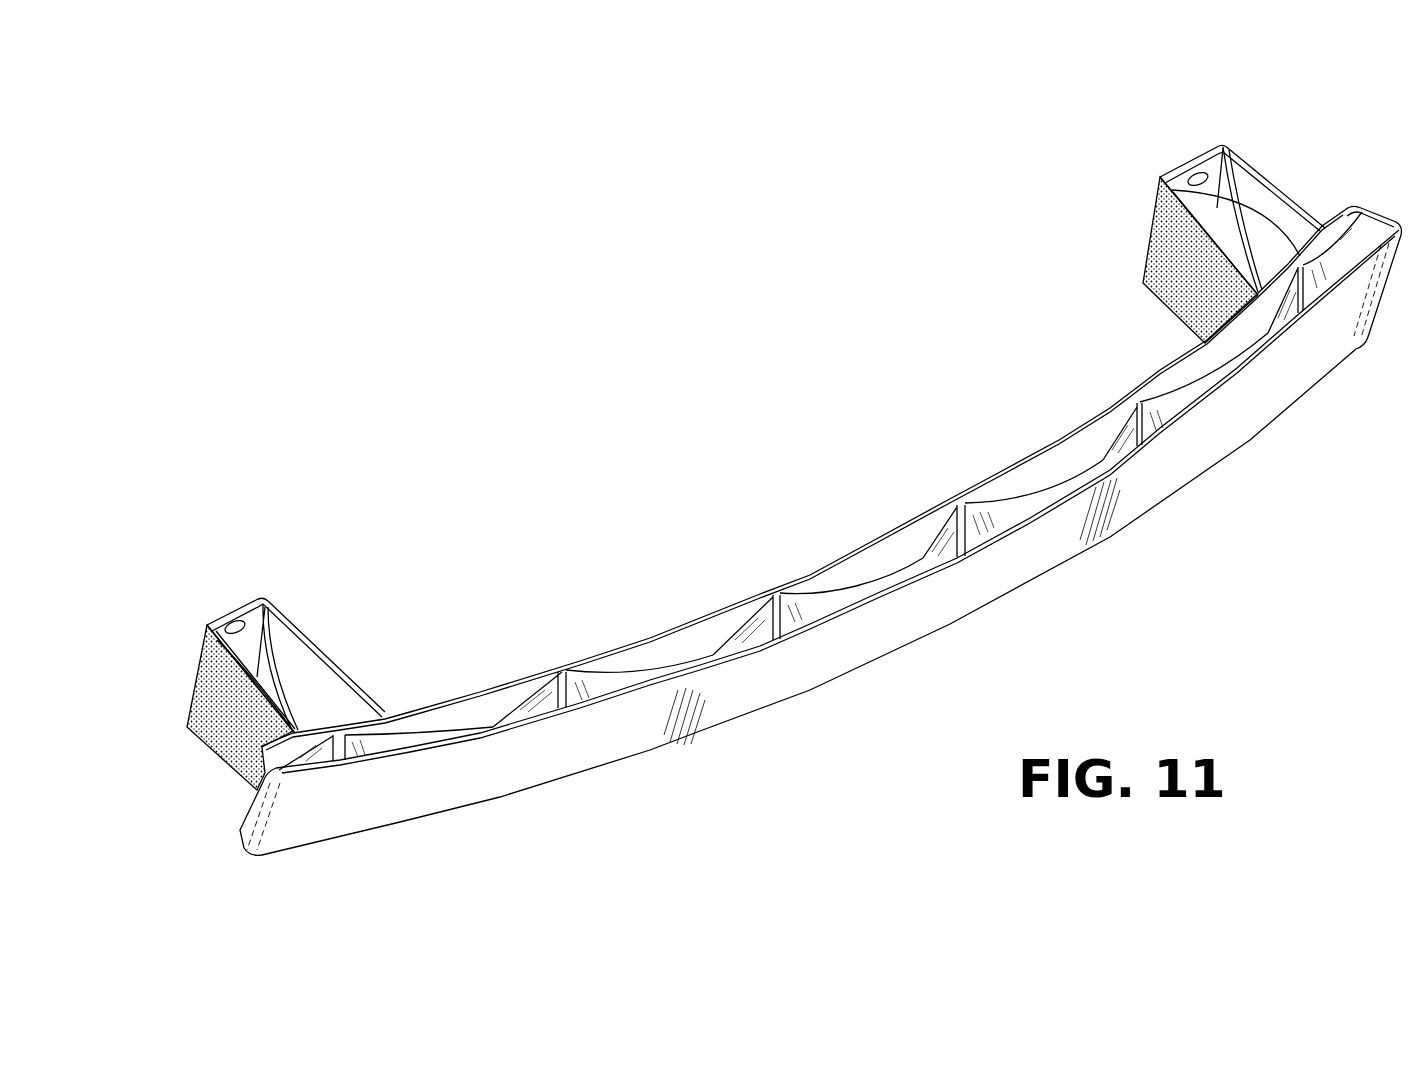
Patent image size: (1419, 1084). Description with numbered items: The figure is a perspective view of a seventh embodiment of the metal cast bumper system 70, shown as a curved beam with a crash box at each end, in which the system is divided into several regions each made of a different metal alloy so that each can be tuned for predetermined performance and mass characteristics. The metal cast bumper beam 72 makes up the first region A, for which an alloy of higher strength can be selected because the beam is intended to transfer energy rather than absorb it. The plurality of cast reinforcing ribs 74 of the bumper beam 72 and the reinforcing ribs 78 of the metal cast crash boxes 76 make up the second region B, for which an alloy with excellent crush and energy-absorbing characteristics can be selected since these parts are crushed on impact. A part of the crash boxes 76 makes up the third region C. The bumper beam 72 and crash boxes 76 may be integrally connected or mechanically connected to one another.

The bumper system 70 is at (257, 528).
The metal cast bumper beam 72 is at (1243, 443).
The cast reinforcing ribs 74 is at (400, 734).
The metal cast crash box 76 is at (342, 664).
The cast reinforcing ribs 78 is at (266, 676).
The first region A is at (840, 641).
The second region B is at (307, 690).
The third region C is at (217, 732).